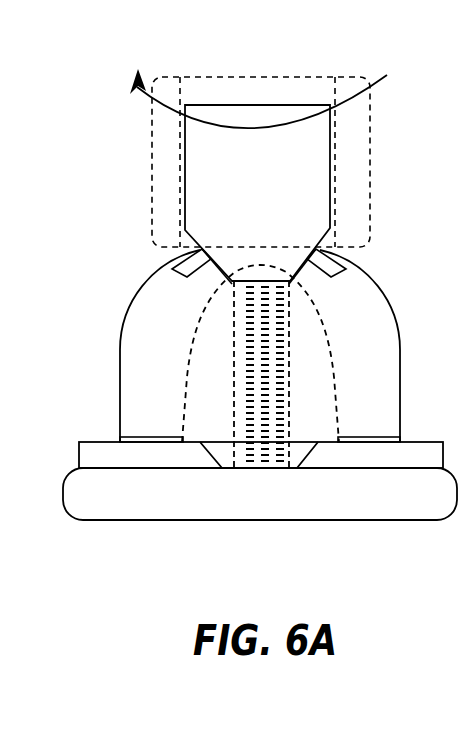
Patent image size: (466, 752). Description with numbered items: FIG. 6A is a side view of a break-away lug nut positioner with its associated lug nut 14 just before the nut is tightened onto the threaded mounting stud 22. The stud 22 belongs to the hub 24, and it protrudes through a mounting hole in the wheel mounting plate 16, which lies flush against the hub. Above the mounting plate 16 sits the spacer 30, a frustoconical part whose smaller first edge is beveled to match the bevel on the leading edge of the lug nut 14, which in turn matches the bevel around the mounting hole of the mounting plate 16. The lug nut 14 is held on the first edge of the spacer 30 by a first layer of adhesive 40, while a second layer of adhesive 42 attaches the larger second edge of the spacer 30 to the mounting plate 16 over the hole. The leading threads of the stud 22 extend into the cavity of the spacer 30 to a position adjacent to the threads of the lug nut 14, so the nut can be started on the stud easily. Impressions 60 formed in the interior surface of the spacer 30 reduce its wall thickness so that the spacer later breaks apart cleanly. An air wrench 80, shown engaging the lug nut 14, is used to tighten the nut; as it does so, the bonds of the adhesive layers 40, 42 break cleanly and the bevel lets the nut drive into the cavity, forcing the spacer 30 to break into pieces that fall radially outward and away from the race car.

The lug nut 14 is at (297, 151).
The wheel mounting plate 16 is at (250, 434).
The threaded mounting stud 22 is at (192, 364).
The hub 24 is at (260, 517).
The spacer 30 is at (275, 346).
The first layer of adhesive 40 is at (172, 269).
The second layer of adhesive 42 is at (248, 401).
The impression 60 is at (252, 353).
The air wrench 80 is at (289, 162).